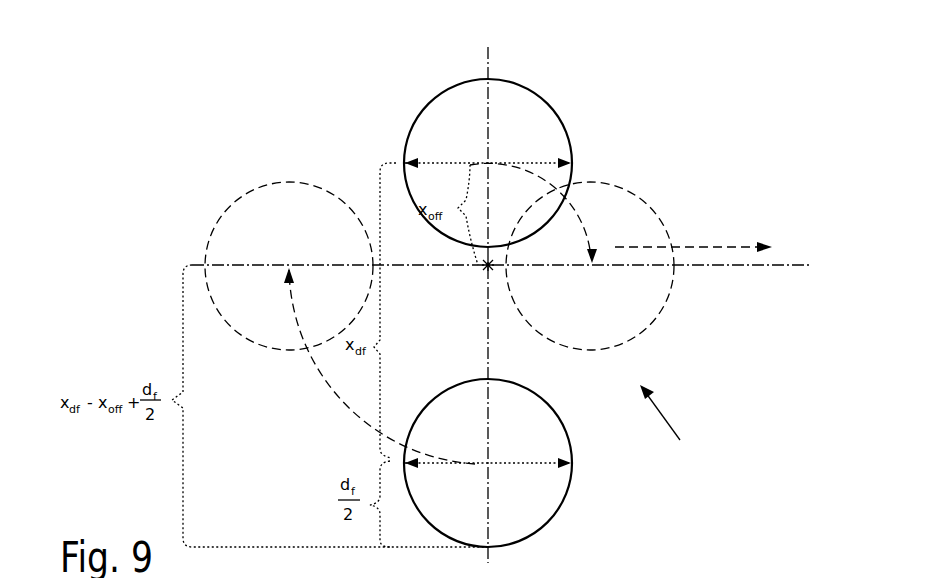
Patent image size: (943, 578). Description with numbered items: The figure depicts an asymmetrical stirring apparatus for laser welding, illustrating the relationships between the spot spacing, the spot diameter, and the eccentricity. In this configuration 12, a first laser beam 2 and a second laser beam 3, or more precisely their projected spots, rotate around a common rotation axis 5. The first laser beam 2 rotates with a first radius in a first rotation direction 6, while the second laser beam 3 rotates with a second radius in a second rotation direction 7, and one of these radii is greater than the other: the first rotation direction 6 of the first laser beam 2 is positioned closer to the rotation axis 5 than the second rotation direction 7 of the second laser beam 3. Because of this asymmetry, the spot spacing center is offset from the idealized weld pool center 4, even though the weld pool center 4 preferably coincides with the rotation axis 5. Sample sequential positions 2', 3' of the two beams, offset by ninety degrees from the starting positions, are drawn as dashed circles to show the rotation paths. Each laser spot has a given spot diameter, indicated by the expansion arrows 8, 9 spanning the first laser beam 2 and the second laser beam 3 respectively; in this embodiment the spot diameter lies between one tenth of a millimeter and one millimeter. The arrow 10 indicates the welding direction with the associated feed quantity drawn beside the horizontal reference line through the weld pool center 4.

The first laser beam 2 is at (488, 135).
The sequential position of first laser beam 2' is at (612, 277).
The second laser beam 3 is at (511, 463).
The sequential position of second laser beam 3' is at (289, 236).
The weld pool center 4 is at (797, 262).
The rotation axis 5 is at (483, 271).
The first rotation direction 6 is at (575, 200).
The second rotation direction 7 is at (332, 381).
The expansion arrow 8 is at (432, 148).
The expansion arrow 9 is at (543, 458).
The winding speed vector v_w 10 is at (740, 246).
The configuration 12 is at (671, 431).